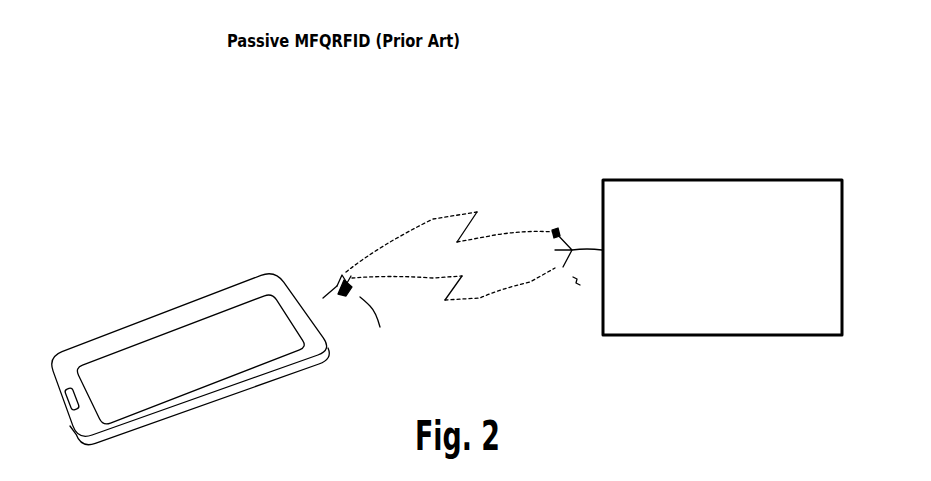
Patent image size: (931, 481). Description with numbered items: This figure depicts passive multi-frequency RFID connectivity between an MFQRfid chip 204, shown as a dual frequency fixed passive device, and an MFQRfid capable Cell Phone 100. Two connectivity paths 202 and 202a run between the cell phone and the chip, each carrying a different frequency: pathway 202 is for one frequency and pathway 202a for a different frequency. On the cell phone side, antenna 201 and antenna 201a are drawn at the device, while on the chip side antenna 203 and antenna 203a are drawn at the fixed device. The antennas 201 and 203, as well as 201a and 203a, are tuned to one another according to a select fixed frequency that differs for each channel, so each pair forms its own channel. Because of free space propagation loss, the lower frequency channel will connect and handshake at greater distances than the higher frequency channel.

The MFQRfid capable Cell Phone 100 is at (228, 396).
The antenna 201 is at (341, 262).
The antenna 201a is at (395, 328).
The connectivity path 202 is at (475, 201).
The connectivity path 202a is at (477, 307).
The antenna 203 is at (570, 232).
The antenna 203a is at (570, 296).
The MFQRfid chip 204 is at (730, 336).